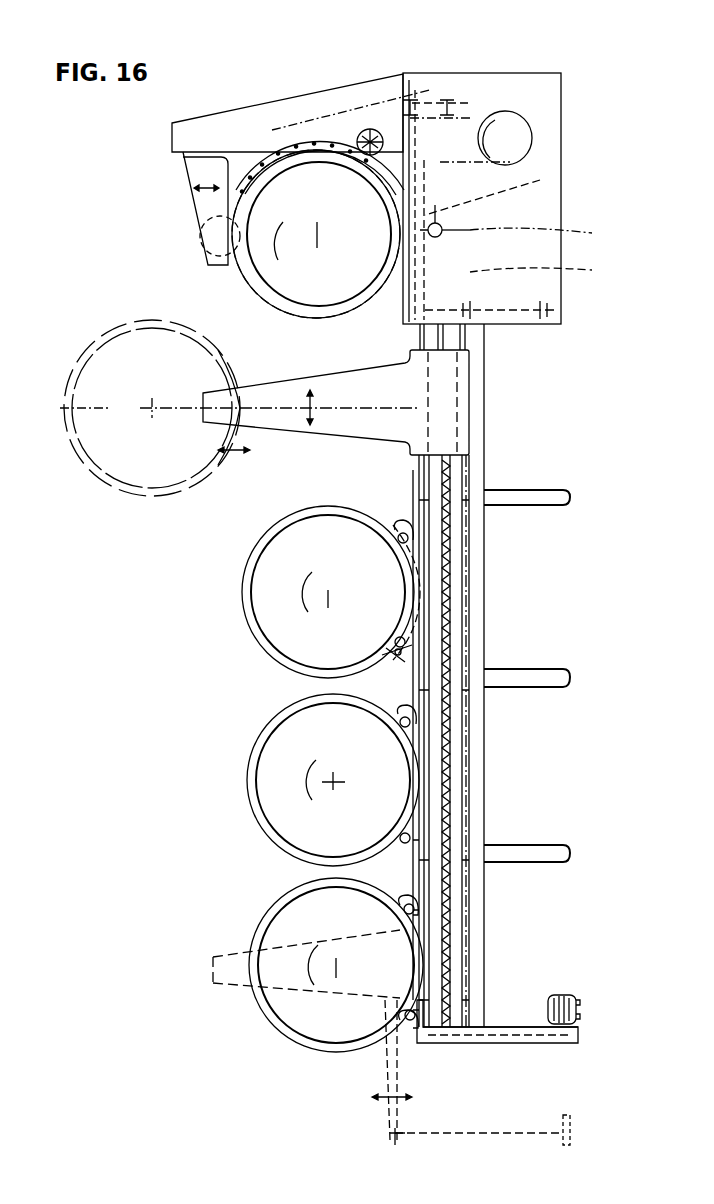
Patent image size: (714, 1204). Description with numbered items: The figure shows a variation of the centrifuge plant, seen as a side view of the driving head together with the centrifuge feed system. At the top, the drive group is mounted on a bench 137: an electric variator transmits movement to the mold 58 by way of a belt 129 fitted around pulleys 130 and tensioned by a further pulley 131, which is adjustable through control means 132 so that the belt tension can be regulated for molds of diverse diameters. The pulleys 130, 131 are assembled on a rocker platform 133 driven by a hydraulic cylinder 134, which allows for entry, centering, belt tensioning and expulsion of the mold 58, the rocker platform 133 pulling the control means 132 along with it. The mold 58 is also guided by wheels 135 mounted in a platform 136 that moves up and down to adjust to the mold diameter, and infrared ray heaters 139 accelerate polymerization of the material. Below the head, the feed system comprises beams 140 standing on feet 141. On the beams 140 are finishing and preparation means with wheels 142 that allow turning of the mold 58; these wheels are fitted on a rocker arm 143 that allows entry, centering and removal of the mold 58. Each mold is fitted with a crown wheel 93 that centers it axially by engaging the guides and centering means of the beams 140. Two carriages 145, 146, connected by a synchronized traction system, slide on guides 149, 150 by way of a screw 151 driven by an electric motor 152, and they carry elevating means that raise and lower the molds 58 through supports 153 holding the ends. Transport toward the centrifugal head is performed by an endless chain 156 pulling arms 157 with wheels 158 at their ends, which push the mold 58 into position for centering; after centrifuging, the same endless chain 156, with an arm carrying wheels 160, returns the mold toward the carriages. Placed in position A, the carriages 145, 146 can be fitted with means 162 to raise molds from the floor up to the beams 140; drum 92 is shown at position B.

The mold 58 is at (286, 150).
The drum B 92 is at (262, 830).
The crown wheel 93 is at (262, 152).
The belt 129 is at (318, 118).
The pulleys 130 is at (395, 100).
The further pulley 131 is at (418, 102).
The control means 132 is at (470, 98).
The rocker platform 133 is at (549, 266).
The hydraulic cylinder 134 is at (540, 318).
The wheels 135 is at (232, 230).
The platform 136 is at (200, 160).
The bench 137 is at (561, 96).
The infrared ray heaters 139 is at (260, 150).
The beams 140 is at (395, 1030).
The feet 141 is at (562, 492).
The wheels 142 is at (412, 838).
The rocker arm 143 is at (440, 586).
The carriage 145 is at (280, 398).
The carriage 146 is at (215, 985).
The guide 149 is at (436, 1043).
The guide 150 is at (470, 1022).
The screw 151 is at (462, 1040).
The electric motor 152 is at (572, 995).
The support 153 is at (230, 348).
The endless chain 156 is at (400, 525).
The arms 157 is at (540, 180).
The wheels 158 is at (397, 660).
The wheels 160 is at (536, 231).
The means 162 is at (392, 1133).